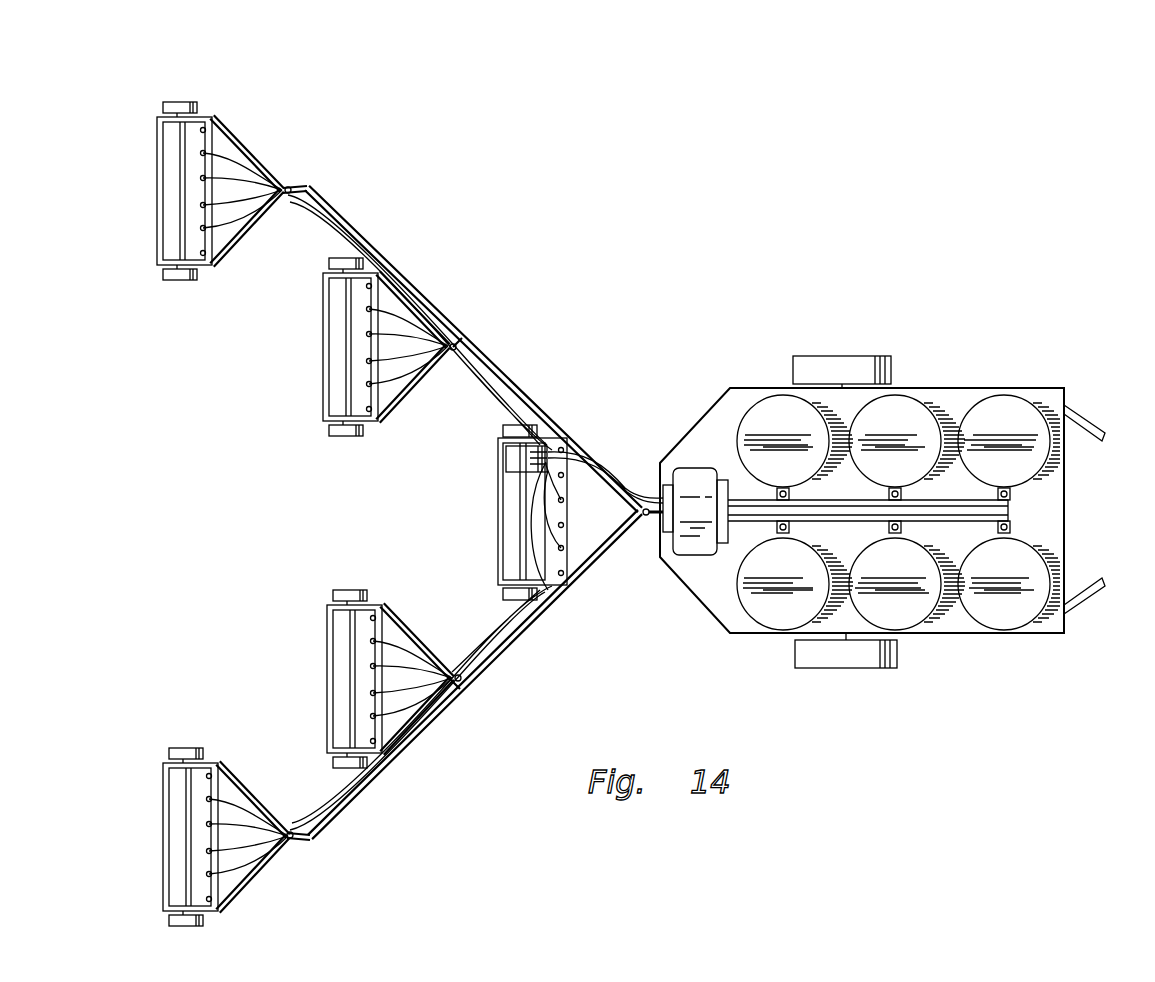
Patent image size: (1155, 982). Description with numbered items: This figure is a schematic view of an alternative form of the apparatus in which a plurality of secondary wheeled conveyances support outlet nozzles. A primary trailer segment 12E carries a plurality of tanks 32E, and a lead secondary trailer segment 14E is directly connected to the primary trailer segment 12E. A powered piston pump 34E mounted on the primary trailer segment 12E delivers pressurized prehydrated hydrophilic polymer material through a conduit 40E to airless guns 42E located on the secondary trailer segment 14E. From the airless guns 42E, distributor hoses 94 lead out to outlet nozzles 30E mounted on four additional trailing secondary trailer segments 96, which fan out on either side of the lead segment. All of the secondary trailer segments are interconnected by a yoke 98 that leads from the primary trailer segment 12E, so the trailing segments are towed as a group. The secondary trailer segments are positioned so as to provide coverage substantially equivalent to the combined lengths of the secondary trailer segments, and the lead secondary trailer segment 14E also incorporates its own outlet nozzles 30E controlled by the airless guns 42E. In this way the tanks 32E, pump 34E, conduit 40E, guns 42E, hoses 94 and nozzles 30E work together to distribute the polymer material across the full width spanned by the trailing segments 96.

The primary trailer segment 12E is at (945, 395).
The secondary trailer segment 14E is at (498, 540).
The outlet nozzles 30E is at (213, 165).
The tanks 32E is at (763, 393).
The powered piston pump 34E is at (663, 470).
The conduit 40E is at (608, 472).
The airless guns 42E is at (540, 464).
The distributor hoses 94 is at (308, 204).
The additional trailing secondary trailer segments 96 is at (212, 266).
The yoke 98 is at (470, 373).